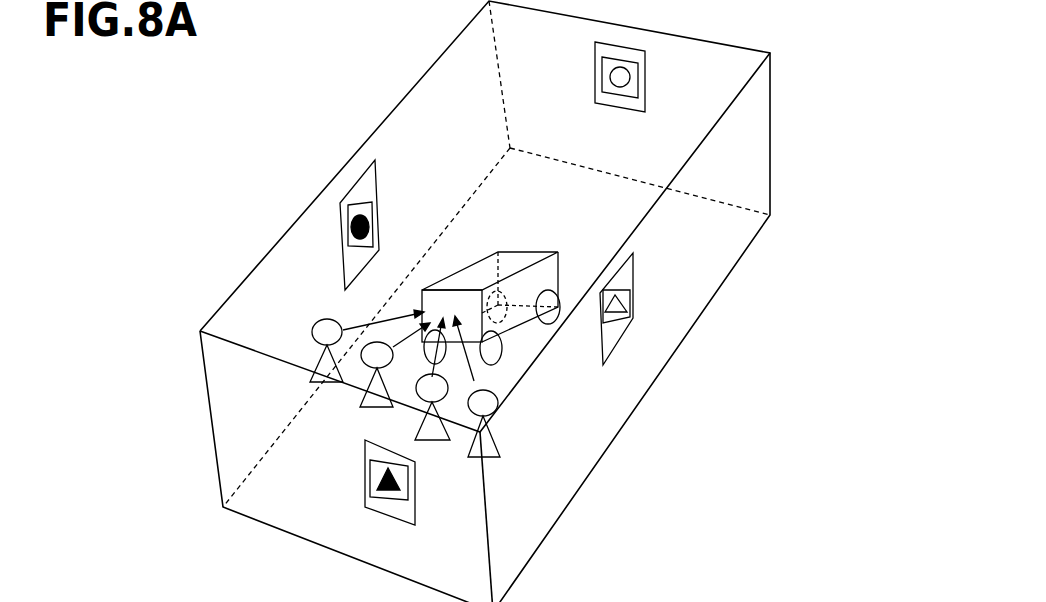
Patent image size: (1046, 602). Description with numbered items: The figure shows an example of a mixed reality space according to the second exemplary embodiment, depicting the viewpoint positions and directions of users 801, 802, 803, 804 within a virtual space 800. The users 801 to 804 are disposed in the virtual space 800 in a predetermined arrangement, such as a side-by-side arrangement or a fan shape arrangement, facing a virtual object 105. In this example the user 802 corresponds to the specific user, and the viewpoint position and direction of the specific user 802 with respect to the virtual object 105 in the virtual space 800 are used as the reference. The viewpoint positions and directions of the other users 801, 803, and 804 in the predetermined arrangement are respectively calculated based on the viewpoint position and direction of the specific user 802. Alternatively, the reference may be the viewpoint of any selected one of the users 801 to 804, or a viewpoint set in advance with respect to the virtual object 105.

The virtual space 800 is at (690, 52).
The virtual object 105 is at (485, 268).
The user 801 is at (310, 382).
The specific user 802 is at (368, 407).
The user 803 is at (432, 433).
The user 804 is at (492, 438).